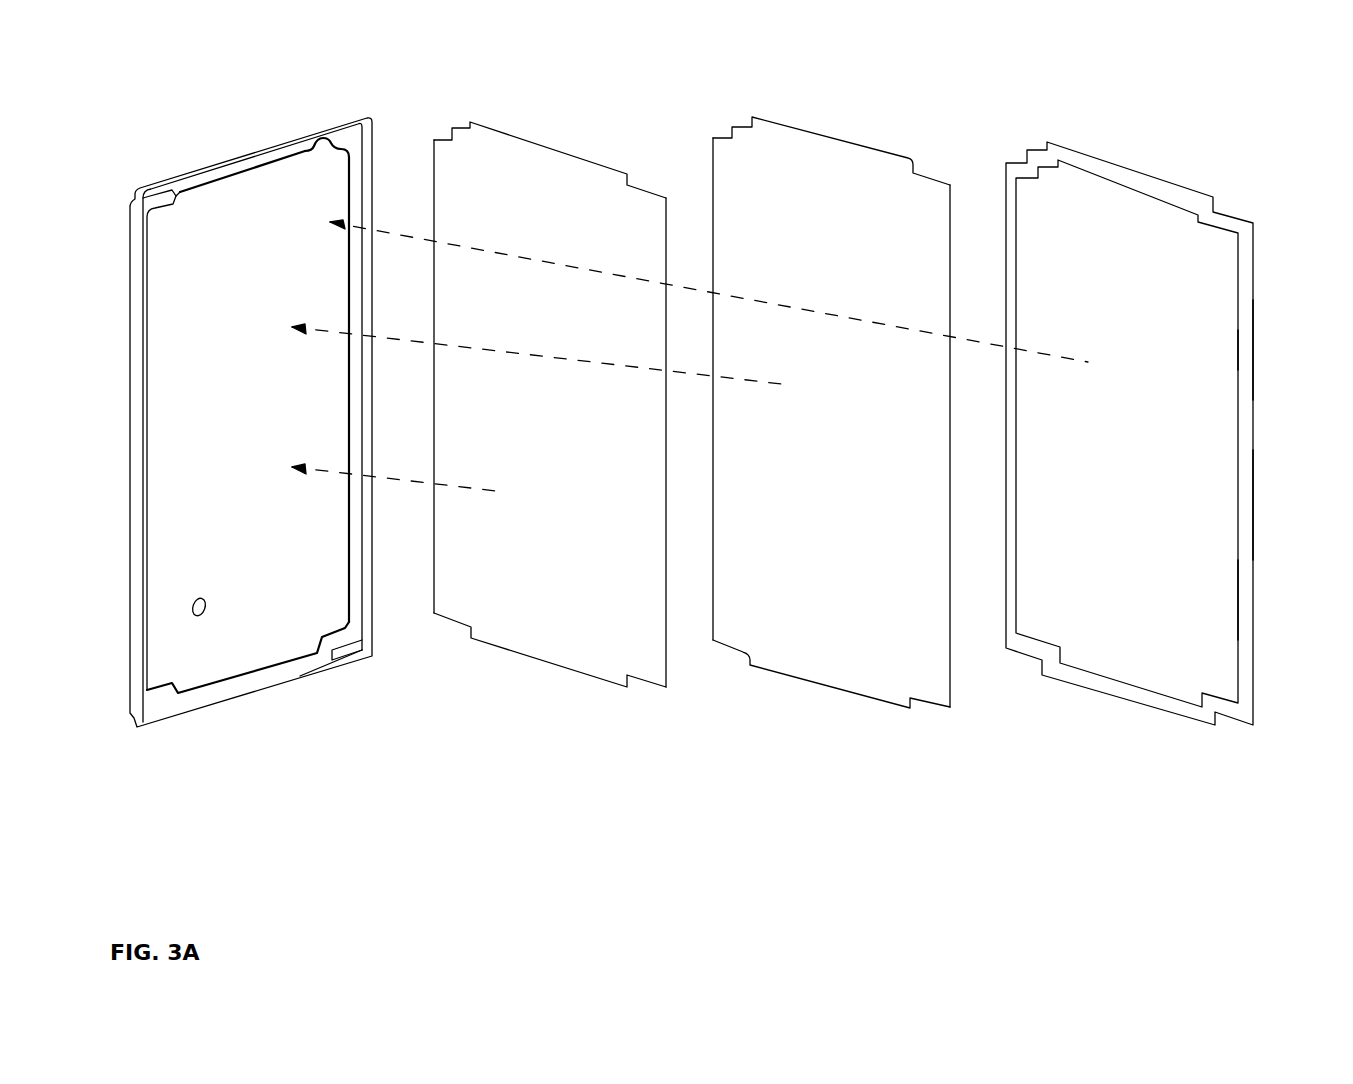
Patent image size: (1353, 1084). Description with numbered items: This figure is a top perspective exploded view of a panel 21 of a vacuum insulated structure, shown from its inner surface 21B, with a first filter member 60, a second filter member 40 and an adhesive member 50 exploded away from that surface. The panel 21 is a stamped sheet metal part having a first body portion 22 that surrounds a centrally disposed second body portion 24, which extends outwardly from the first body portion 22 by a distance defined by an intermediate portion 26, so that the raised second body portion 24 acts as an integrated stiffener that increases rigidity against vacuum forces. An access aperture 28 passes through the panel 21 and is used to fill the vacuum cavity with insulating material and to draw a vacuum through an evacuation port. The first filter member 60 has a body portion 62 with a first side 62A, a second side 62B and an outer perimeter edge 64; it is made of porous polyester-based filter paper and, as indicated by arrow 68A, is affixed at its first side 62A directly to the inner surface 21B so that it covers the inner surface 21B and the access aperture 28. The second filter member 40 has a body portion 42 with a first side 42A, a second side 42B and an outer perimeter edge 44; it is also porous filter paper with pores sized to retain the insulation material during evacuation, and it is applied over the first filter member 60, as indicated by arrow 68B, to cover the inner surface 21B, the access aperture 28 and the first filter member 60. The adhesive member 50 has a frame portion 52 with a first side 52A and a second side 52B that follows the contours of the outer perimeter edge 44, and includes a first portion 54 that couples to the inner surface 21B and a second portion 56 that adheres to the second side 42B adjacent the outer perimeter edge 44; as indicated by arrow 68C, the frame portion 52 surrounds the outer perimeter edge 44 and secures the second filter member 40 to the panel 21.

The panel 21 is at (196, 136).
The first body portion 22 is at (165, 195).
The second body portion 24 is at (178, 232).
The intermediate portion 26 is at (334, 158).
The access aperture 28 is at (193, 606).
The inner surface 21B is at (254, 415).
The arrow 68A is at (406, 477).
The arrow 68B is at (406, 339).
The arrow 68C is at (413, 231).
The first filter member 60 is at (557, 138).
The body portion 62 is at (520, 180).
The outer perimeter edge 64 is at (493, 128).
The first side 62A is at (570, 435).
The second side 62B is at (668, 625).
The second filter member 40 is at (870, 137).
The body portion 42 is at (832, 180).
The outer perimeter edge 44 is at (805, 128).
The first side 42A is at (870, 460).
The second side 42B is at (950, 652).
The adhesive member 50 is at (1138, 160).
The frame portion 52 is at (1245, 283).
The first portion 54 is at (1253, 345).
The second portion 56 is at (1235, 347).
The first side 52A is at (1244, 595).
The second side 52B is at (1255, 505).